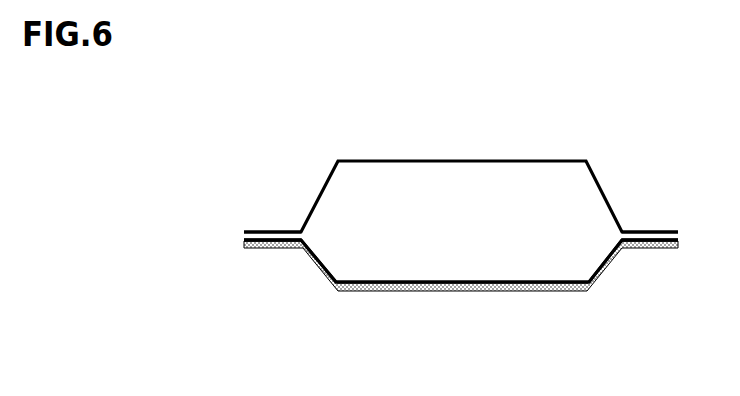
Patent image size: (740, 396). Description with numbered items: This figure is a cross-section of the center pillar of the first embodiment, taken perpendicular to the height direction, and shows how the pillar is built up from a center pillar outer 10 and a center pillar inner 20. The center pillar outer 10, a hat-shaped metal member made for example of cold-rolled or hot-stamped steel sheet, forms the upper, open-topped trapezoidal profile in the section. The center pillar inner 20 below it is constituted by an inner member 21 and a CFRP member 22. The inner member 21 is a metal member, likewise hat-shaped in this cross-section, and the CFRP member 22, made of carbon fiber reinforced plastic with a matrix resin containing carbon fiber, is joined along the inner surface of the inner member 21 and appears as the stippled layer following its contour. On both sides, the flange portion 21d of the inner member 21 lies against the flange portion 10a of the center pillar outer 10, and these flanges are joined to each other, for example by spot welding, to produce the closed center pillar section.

The center pillar outer 10 is at (381, 154).
The flange portion 10a is at (278, 232).
The center pillar inner 20 is at (386, 304).
The inner member 21 is at (407, 280).
The flange portion 21d is at (277, 248).
The CFRP member 22 is at (463, 292).